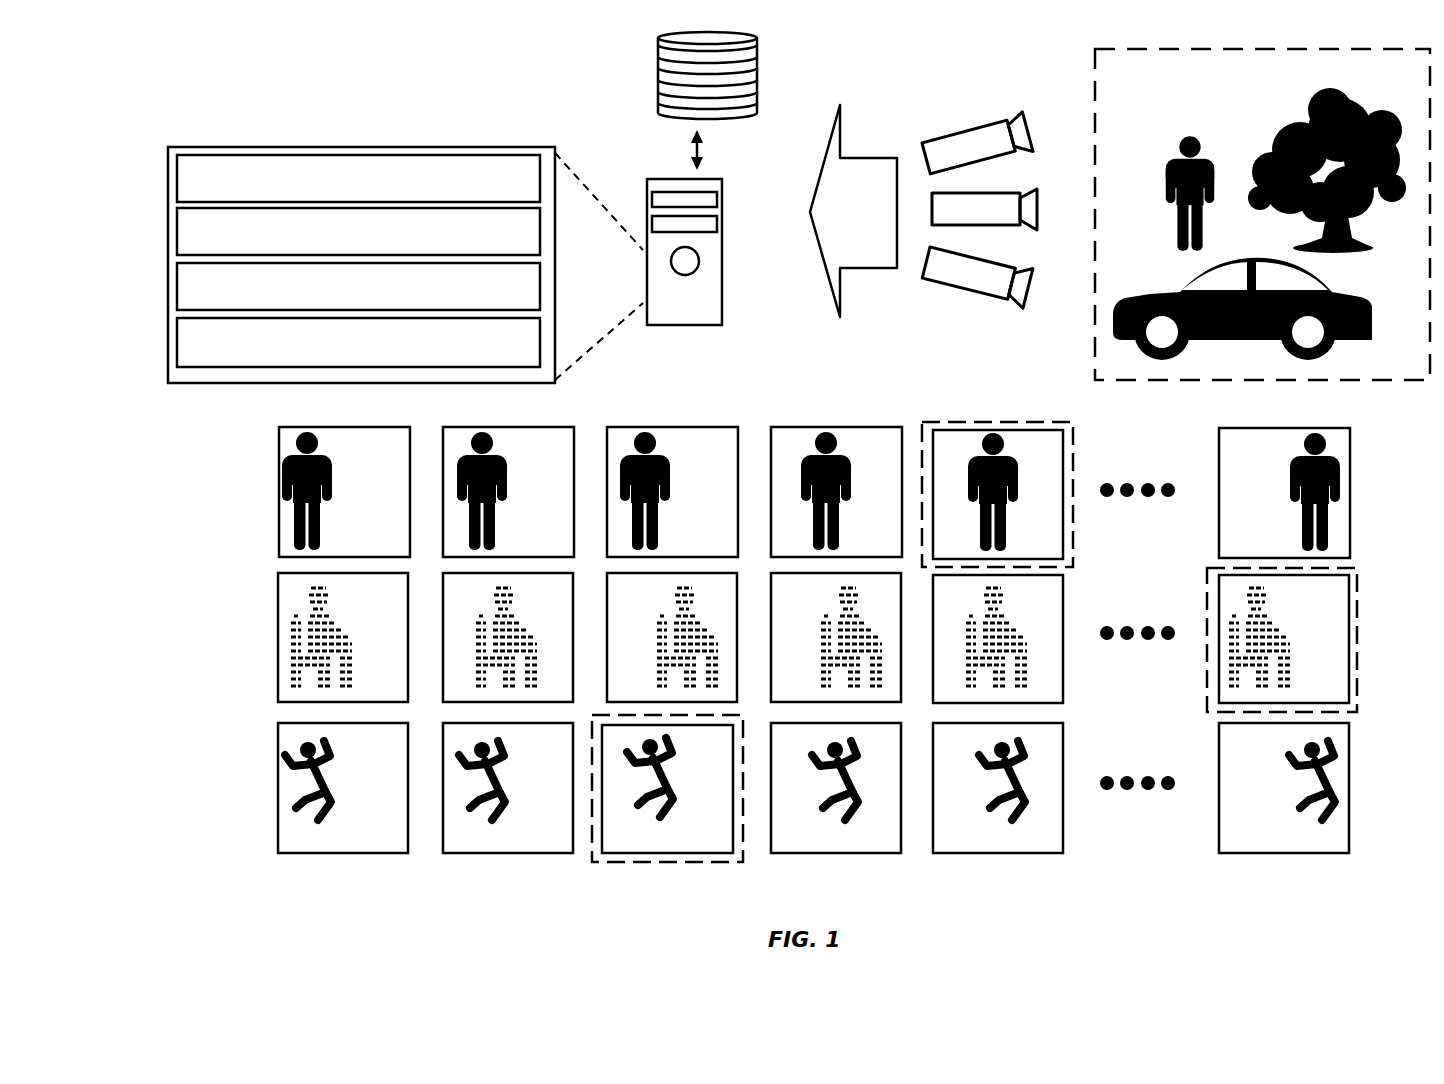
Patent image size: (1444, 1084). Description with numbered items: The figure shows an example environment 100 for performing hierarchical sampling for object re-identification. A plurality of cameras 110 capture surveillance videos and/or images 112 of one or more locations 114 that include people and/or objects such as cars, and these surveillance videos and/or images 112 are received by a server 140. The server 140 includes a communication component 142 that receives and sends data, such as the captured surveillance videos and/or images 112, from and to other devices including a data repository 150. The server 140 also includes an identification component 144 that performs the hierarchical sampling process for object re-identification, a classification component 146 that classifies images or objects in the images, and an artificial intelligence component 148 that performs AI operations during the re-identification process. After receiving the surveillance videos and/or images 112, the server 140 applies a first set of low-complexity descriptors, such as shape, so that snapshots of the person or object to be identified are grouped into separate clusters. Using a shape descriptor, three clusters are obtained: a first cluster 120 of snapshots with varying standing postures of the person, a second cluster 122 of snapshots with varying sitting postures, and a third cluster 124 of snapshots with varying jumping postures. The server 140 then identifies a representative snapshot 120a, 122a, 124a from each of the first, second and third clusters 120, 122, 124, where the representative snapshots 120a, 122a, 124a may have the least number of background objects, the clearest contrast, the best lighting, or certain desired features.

The environment 100 is at (182, 93).
The cameras 110 is at (959, 109).
The surveillance videos and/or images 112 is at (838, 325).
The locations 114 is at (1262, 214).
The first cluster 120 is at (258, 472).
The representative snapshot 120a is at (975, 422).
The second cluster 122 is at (258, 613).
The representative snapshot 122a is at (1357, 568).
The third cluster 124 is at (258, 761).
The representative snapshot 124a is at (596, 862).
The server 140 is at (723, 232).
The communication component 142 is at (358, 178).
The identification component 144 is at (358, 231).
The classification component 146 is at (358, 286).
The artificial intelligence (AI) component 148 is at (358, 342).
The data repository 150 is at (758, 82).